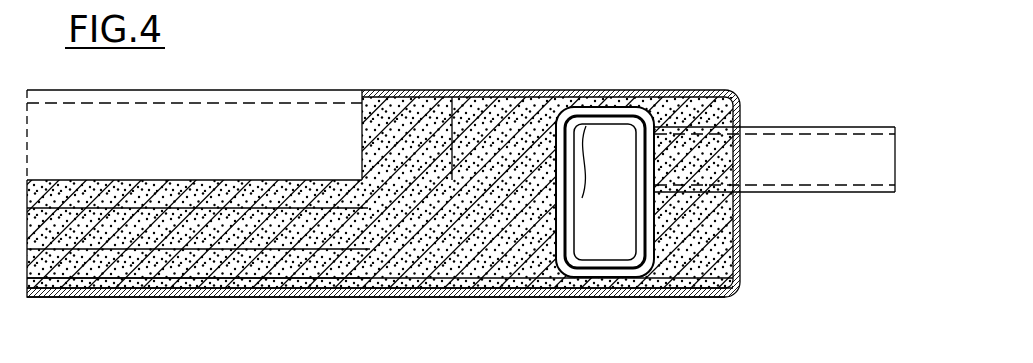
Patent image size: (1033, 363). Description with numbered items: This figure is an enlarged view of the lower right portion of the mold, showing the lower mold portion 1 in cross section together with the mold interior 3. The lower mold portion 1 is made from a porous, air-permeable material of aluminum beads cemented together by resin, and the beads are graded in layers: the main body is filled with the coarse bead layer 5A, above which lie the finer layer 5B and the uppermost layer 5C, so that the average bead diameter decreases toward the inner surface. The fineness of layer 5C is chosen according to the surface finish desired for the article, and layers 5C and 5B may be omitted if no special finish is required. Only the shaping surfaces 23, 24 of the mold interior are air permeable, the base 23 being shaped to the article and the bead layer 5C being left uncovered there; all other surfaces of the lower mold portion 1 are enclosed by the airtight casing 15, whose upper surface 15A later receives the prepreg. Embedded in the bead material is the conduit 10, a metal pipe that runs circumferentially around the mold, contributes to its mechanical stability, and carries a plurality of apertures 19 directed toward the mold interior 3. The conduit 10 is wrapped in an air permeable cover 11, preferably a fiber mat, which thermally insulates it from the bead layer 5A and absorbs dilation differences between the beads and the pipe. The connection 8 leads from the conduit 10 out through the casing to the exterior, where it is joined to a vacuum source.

The lower mold portion 1 is at (750, 233).
The mold interior 3 is at (168, 149).
The coarse bead layer 5A is at (297, 257).
The intermediate bead layer 5B is at (245, 222).
The uppermost bead layer 5C is at (193, 196).
The connection 8 is at (815, 147).
The conduit 10 is at (608, 118).
The air permeable cover 11 is at (566, 105).
The casing 15 is at (320, 297).
The upper surface of the casing 15A is at (682, 92).
The apertures 19 is at (582, 190).
The base of the mold interior 23 is at (107, 180).
The shaping surface 24 is at (360, 122).